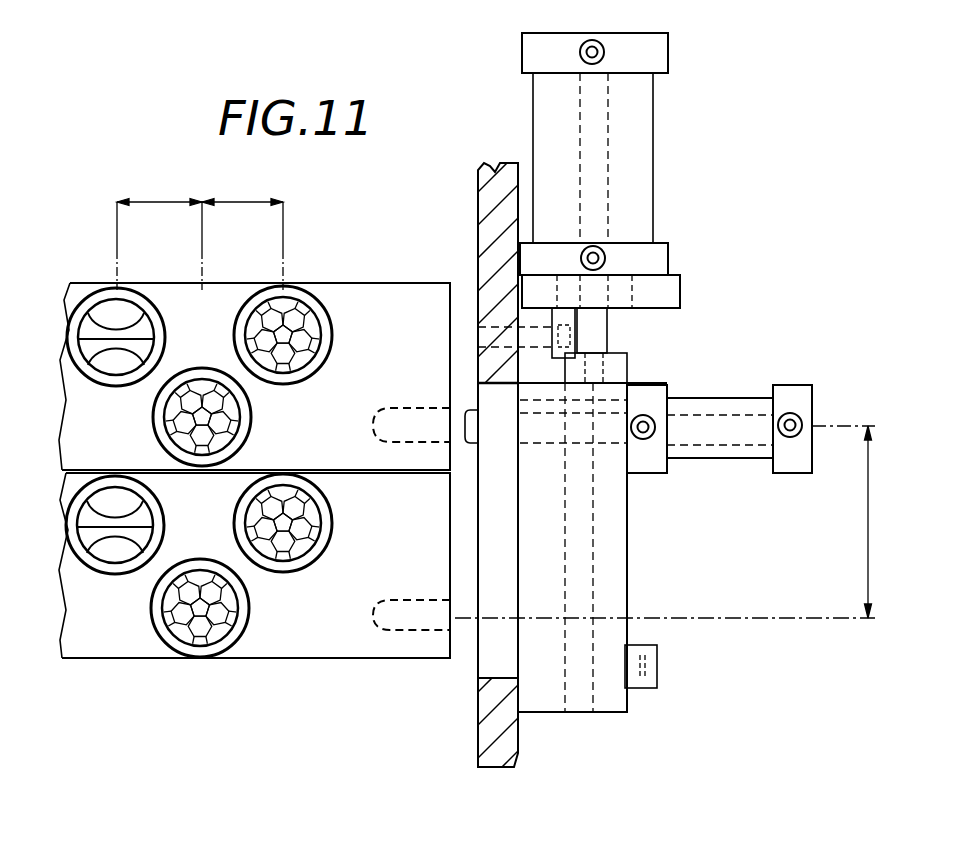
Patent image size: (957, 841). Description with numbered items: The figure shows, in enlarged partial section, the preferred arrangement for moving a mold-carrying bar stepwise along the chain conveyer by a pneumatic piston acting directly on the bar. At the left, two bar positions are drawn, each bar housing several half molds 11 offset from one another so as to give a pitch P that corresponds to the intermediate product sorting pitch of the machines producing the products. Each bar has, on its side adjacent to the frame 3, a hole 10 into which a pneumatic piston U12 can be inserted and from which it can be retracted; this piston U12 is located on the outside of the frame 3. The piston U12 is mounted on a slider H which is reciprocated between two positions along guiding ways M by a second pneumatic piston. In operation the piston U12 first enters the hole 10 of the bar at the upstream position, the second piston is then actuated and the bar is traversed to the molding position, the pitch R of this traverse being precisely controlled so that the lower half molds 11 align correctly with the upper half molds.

The frame 3 is at (478, 178).
The hole 10 is at (400, 404).
The half molds 11 is at (298, 312).
The pitch P is at (200, 231).
The slider H is at (600, 416).
The guiding ways M is at (616, 582).
The piston U/2 U12 is at (720, 406).
The pitch of traverse R is at (868, 536).